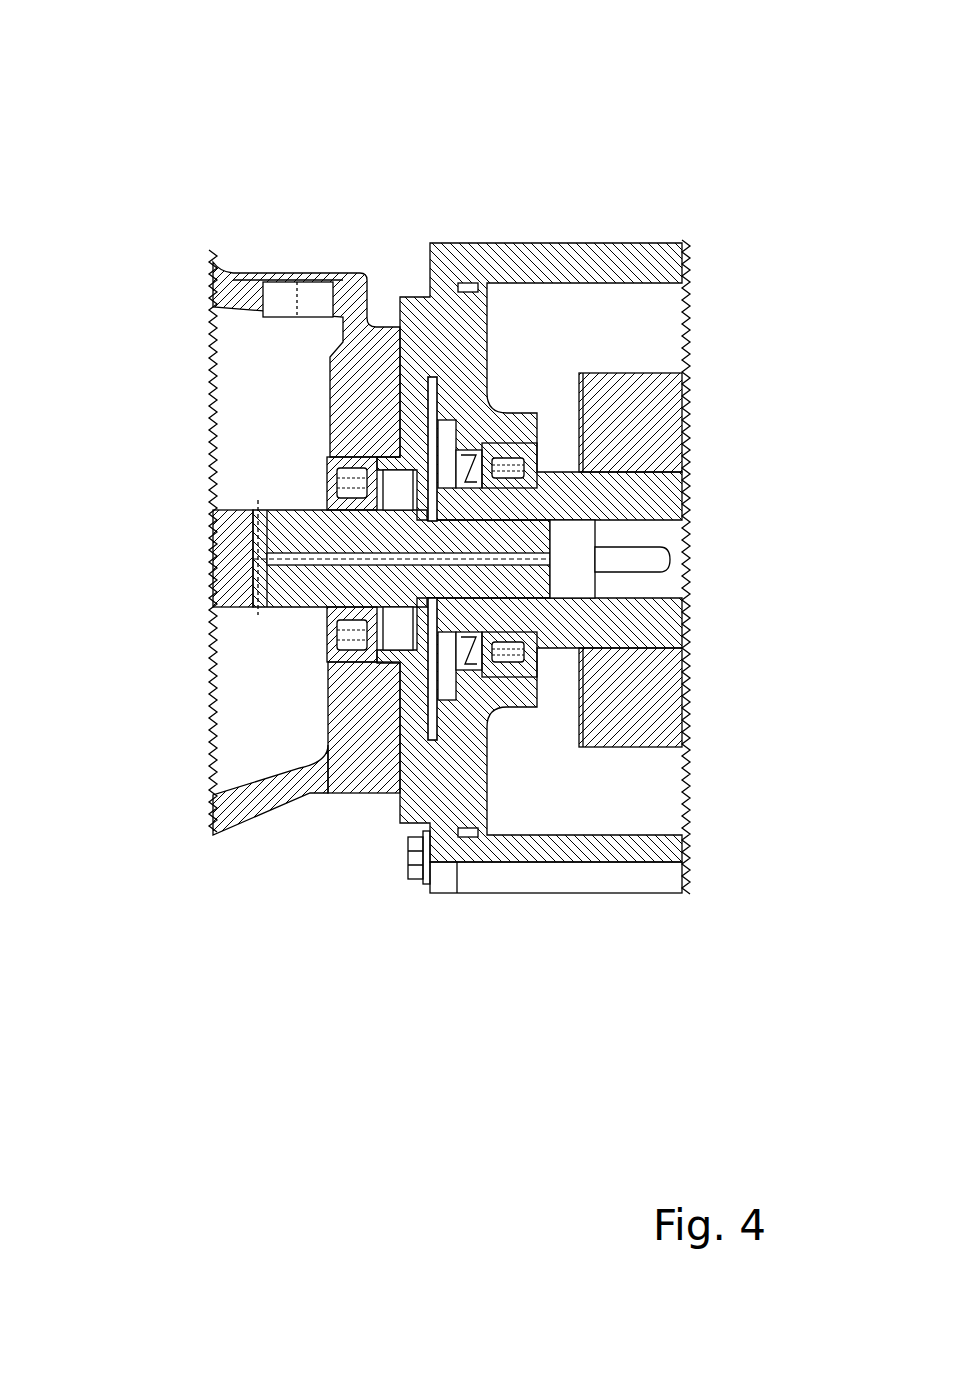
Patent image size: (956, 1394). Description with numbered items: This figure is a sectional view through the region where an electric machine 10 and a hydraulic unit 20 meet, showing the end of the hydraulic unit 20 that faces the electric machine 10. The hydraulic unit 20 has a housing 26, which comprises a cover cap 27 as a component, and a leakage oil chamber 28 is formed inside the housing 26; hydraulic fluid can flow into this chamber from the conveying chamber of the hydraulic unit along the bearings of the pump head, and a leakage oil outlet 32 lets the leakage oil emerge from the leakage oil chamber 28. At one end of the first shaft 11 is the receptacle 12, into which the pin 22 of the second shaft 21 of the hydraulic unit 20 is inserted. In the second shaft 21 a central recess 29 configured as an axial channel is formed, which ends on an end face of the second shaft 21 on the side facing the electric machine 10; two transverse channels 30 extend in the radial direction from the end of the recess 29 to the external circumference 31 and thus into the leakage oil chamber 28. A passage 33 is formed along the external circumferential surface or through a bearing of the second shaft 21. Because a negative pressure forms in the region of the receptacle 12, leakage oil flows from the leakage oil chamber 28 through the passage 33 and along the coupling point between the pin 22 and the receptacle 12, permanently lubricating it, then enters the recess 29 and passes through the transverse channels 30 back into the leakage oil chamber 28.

The electric machine 10 is at (690, 138).
The first shaft 11 is at (663, 507).
The receptacle 12 is at (520, 518).
The hydraulic unit 20 is at (200, 172).
The second shaft 21 is at (230, 568).
The pin 22 is at (527, 592).
The housing 26 is at (245, 818).
The cover cap 27 is at (413, 423).
The leakage oil chamber 28 is at (250, 707).
The central recess 29 is at (302, 553).
The transverse channels 30 is at (245, 535).
The external circumference 31 is at (253, 548).
The leakage oil outlet 32 is at (306, 292).
The passage 33 is at (355, 607).